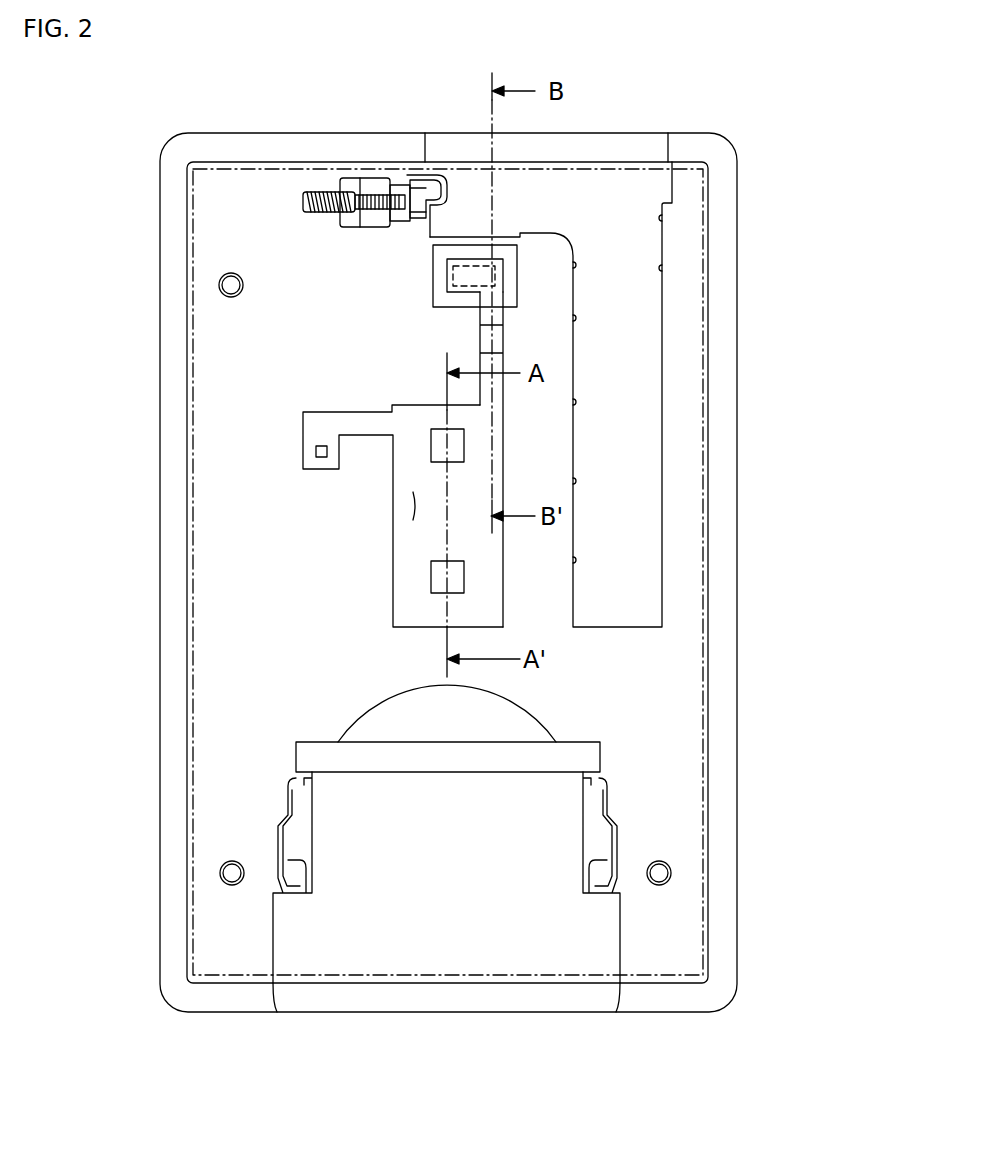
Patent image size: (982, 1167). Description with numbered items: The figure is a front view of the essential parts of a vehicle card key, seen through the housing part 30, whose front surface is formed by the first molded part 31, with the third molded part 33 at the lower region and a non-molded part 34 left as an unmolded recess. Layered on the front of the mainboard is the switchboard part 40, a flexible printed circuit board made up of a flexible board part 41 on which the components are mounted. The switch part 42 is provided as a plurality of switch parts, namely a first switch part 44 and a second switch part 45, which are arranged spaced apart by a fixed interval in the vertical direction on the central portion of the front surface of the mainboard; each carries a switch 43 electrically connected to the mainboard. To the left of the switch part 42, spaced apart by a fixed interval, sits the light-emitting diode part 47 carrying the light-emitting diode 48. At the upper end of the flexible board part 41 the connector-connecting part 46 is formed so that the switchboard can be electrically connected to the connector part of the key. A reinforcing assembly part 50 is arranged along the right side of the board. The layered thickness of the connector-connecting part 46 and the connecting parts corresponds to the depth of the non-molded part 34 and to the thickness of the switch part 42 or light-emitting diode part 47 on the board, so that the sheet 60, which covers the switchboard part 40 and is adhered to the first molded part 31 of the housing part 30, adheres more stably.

The housing part 30 is at (158, 589).
The first molded part 31 is at (225, 362).
The third molded part 33 is at (172, 780).
The non-molded part 34 is at (412, 507).
The switchboard part 40 is at (480, 486).
The flexible board part 41 is at (497, 388).
The switch part 42 is at (673, 511).
The switch 43 is at (643, 511).
The first switch part 44 is at (455, 446).
The second switch part 45 is at (455, 578).
The connector-connecting part 46 is at (497, 282).
The light-emitting diode part 47 is at (186, 433).
The light-emitting diode 48 is at (317, 450).
The reinforcing assembly part 50 is at (627, 214).
The sheet 60 is at (703, 303).